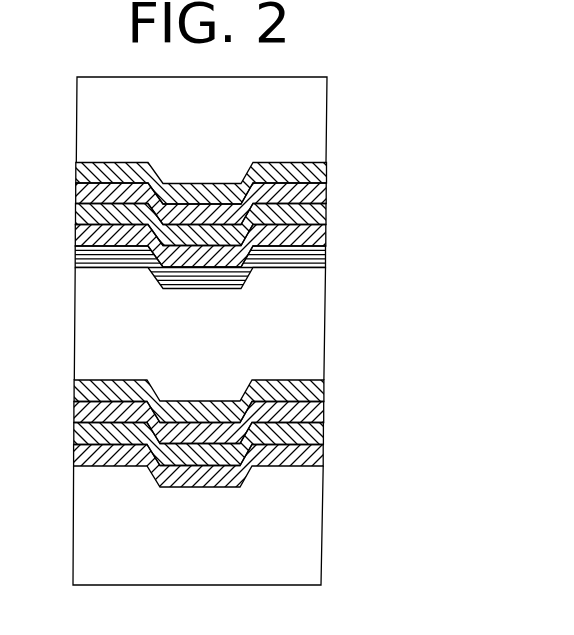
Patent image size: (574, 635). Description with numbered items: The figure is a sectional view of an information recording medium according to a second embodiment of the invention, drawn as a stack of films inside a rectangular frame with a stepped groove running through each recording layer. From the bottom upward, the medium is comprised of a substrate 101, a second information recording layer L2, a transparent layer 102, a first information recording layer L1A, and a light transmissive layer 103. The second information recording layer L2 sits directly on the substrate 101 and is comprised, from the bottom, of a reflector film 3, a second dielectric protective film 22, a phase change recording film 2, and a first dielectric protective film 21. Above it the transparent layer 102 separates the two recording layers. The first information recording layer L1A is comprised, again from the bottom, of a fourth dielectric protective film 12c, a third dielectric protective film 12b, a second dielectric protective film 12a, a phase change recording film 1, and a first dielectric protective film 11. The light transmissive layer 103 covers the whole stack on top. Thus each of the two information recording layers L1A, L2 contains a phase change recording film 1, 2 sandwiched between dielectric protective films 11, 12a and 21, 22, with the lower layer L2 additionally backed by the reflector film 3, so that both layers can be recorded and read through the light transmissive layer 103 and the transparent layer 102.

The substrate 101 is at (322, 541).
The transparent layer 102 is at (324, 331).
The light transmissive layer 103 is at (326, 105).
The first dielectric protective film 11 is at (325, 171).
The phase change recording film 1 is at (325, 196).
The second dielectric protective film 12a is at (325, 214).
The third dielectric protective film 12b is at (325, 239).
The fourth dielectric protective film 12c is at (325, 260).
The first information recording layer L1A is at (410, 140).
The first dielectric protective film 21 is at (324, 390).
The phase change recording film 2 is at (324, 412).
The second dielectric protective film 22 is at (322, 433).
The reflector film 3 is at (322, 455).
The second information recording layer L2 is at (407, 363).